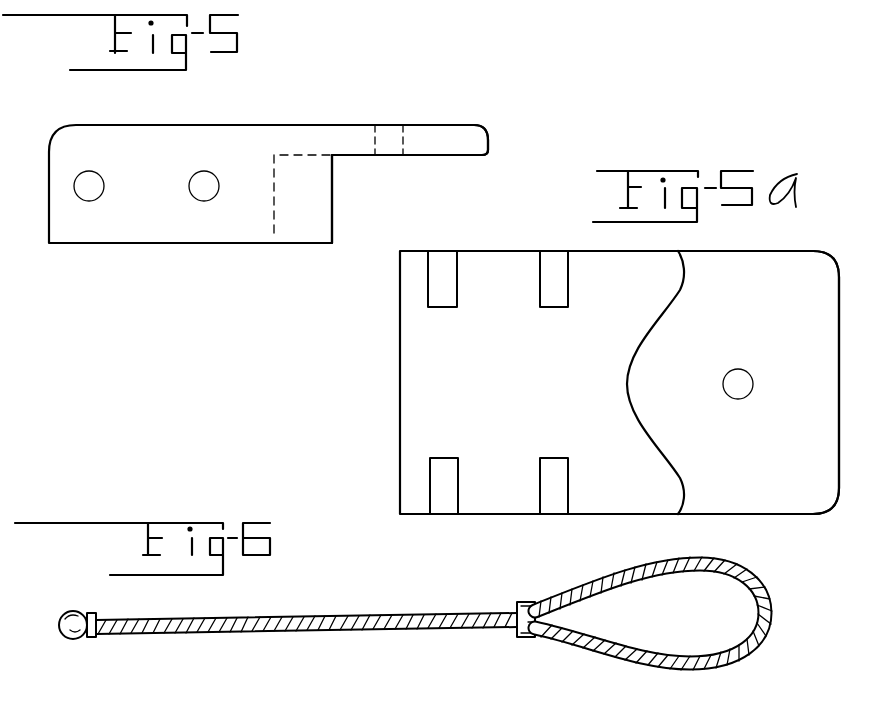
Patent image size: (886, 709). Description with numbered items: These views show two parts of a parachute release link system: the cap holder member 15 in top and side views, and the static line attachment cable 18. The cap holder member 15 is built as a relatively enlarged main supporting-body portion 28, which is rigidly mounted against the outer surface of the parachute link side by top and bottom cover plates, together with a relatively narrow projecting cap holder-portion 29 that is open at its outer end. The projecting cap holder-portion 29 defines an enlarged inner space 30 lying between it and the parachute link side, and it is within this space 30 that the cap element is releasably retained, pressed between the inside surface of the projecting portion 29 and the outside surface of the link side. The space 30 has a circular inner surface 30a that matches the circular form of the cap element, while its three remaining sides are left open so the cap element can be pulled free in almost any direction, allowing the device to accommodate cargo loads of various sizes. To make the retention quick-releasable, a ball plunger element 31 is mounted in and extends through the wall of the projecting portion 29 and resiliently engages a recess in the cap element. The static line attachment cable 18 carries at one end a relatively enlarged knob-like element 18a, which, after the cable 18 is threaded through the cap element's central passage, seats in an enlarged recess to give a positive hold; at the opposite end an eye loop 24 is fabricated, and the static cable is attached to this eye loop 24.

In FIG. 5, the cap holder member 15 is at (300, 121).
In FIG. 5A, the cap holder member 15 is at (395, 407).
In FIG. 5, the main supporting-body portion 28 is at (130, 227).
In FIG. 5A, the main supporting-body portion 28 is at (417, 365).
In FIG. 5, the projecting cap holder-portion 29 is at (440, 126).
In FIG. 5A, the projecting cap holder-portion 29 is at (820, 413).
In FIG. 5, the inner space 30 is at (372, 197).
In FIG. 5, the circular inner surface 30a is at (283, 243).
In FIG. 5, the ball plunger element 31 is at (388, 138).
In FIG. 6, the static line attachment cable 18 is at (373, 610).
In FIG. 6, the knob-like element 18a is at (68, 641).
In FIG. 6, the eye loop 24 is at (762, 590).